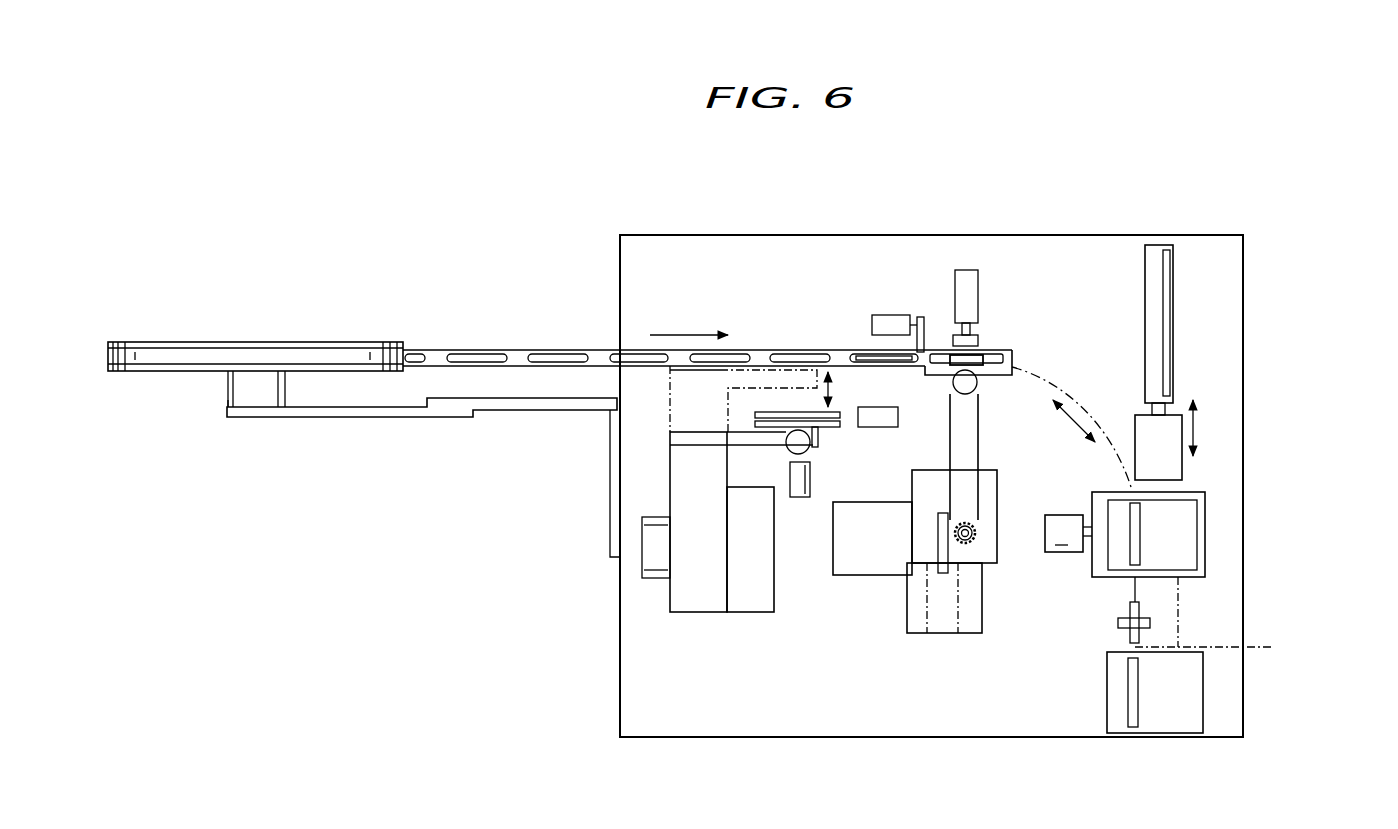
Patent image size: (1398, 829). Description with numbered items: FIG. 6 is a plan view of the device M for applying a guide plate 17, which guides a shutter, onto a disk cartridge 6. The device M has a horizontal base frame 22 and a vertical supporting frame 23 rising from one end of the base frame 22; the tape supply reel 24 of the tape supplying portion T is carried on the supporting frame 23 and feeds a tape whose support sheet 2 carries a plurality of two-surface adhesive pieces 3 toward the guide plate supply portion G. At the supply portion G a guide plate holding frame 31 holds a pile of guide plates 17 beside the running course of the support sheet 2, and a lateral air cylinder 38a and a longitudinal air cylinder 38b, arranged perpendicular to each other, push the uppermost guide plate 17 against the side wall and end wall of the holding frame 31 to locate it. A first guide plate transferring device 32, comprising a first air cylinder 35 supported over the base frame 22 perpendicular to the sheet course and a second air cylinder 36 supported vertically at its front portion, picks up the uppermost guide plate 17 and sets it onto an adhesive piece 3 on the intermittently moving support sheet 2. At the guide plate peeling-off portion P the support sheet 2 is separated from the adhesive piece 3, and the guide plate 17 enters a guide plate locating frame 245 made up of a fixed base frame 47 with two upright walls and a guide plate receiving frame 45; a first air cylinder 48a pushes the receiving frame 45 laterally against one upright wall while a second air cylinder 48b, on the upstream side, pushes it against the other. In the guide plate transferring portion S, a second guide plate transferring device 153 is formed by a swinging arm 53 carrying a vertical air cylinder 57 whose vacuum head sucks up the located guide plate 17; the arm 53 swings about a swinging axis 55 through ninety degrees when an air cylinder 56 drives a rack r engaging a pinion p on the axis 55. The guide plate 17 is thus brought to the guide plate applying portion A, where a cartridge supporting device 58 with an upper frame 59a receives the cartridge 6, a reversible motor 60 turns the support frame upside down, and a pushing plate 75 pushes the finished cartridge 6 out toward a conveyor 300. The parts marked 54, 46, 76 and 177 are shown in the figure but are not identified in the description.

The horizontal base frame 22 is at (830, 738).
The tape supply reel 24 is at (165, 342).
The tape supplying portion T is at (292, 288).
The support sheet 2 is at (440, 350).
The adhesive piece 3 is at (557, 350).
The vertical supporting frame 23 is at (497, 418).
The guide plate holding frame 31 is at (757, 412).
The first air cylinder 35 is at (670, 590).
The first guide plate transferring device 32 is at (711, 622).
The second air cylinder 36 is at (815, 450).
The guide plate supply portion G is at (781, 458).
The lateral air cylinder 38a is at (800, 498).
The longitudinal air cylinder 38b is at (885, 428).
The second air cylinder 48b is at (883, 315).
The first air cylinder 48a is at (965, 270).
The guide plate locating frame 245 is at (933, 302).
The guide plate peeling-off portion P is at (995, 265).
The fixed base frame 47 is at (1012, 358).
The guide plate receiving frame 45 is at (998, 355).
The pad 54 is at (983, 355).
The guide plate 17 is at (862, 350).
The vertical air cylinder 57 is at (978, 389).
The swinging arm 53 is at (980, 445).
The guide plate transferring portion S is at (988, 498).
The second guide plate transferring device 153 is at (937, 499).
The pinion p is at (978, 535).
The rack r is at (916, 575).
The base 46 is at (988, 573).
The swinging axis 55 is at (958, 545).
The air cylinder 56 is at (975, 620).
The cylinder 76 is at (1173, 302).
The pushing plate 75 is at (1182, 462).
The upper frame 59a is at (1205, 500).
The disk cartridge 6 is at (1180, 530).
The cartridge supporting device 58 is at (1212, 585).
The guide plate applying portion A is at (1280, 540).
The reversible motor 60 is at (1063, 552).
The carrier 177 is at (1118, 625).
The conveyor 300 is at (1272, 648).
The device M is at (1190, 185).